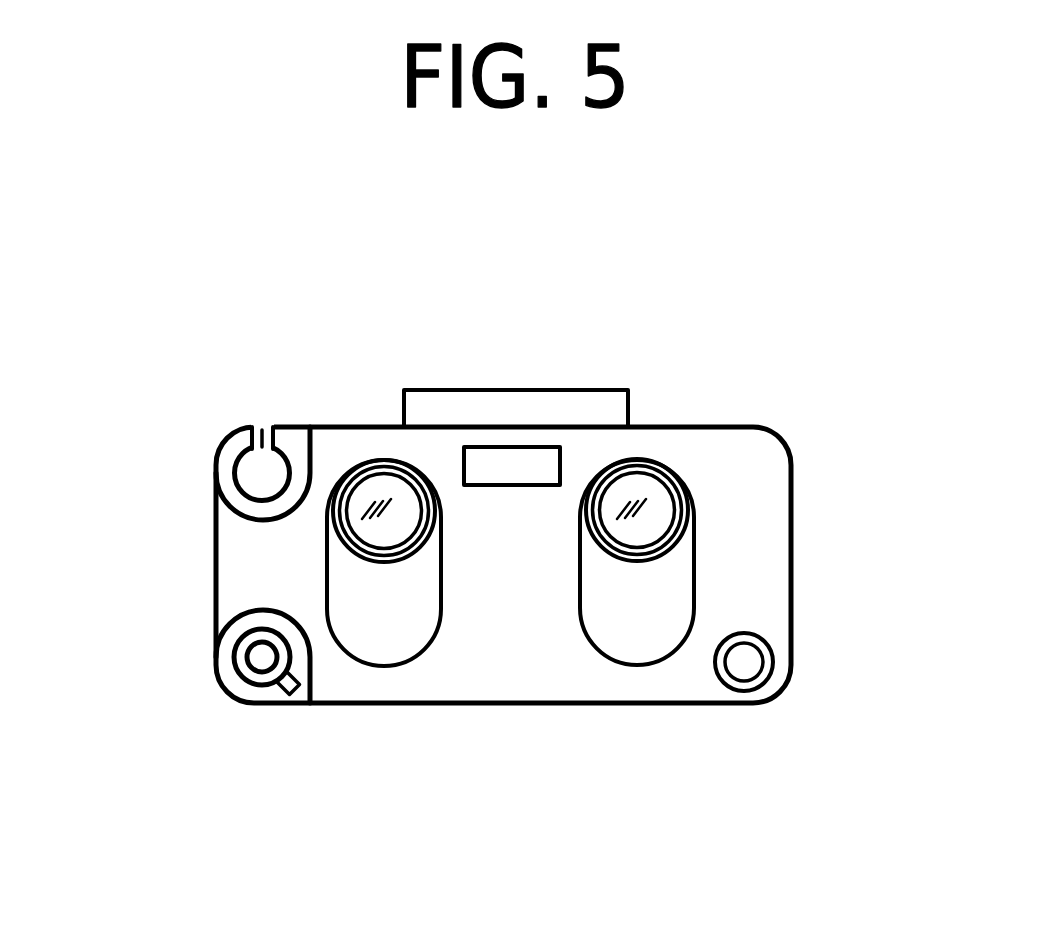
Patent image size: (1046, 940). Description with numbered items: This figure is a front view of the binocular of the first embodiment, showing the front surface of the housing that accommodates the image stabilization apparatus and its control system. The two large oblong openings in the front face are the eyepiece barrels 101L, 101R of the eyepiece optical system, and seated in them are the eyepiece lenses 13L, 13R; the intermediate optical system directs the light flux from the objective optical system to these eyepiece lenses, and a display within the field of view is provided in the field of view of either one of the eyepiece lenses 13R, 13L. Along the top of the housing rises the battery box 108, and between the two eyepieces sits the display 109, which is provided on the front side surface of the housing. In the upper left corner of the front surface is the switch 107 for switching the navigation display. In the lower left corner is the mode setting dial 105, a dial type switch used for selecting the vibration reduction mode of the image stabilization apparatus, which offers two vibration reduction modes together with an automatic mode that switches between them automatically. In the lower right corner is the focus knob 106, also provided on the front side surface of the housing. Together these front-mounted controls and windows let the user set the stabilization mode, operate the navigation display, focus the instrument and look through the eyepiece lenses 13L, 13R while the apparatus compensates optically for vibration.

The eyepiece lens 13L is at (375, 460).
The eyepiece lens 13R is at (652, 460).
The eyepiece barrel 101L is at (350, 545).
The eyepiece barrel 101R is at (673, 549).
The mode setting dial 105 is at (258, 662).
The focus knob 106 is at (743, 665).
The switch 107 is at (265, 427).
The battery box 108 is at (463, 407).
The display 109 is at (533, 462).